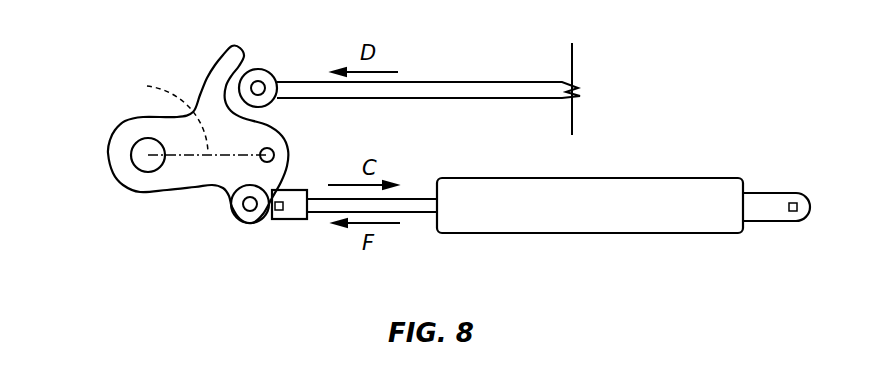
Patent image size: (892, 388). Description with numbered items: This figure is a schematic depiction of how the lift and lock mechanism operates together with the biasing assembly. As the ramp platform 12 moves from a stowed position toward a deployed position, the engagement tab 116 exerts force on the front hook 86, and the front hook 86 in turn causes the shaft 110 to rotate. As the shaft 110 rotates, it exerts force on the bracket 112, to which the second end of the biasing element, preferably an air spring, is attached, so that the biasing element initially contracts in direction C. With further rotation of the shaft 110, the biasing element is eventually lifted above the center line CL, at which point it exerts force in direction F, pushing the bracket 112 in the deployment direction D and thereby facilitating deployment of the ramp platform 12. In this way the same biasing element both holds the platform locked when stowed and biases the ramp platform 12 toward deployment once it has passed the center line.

The ramp platform 12 is at (487, 82).
The front hook 86 is at (221, 72).
The shaft 110 is at (150, 157).
The bracket 112 is at (228, 200).
The engagement tab 116 is at (258, 88).